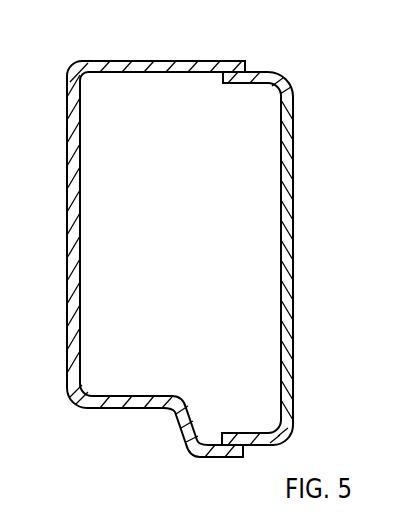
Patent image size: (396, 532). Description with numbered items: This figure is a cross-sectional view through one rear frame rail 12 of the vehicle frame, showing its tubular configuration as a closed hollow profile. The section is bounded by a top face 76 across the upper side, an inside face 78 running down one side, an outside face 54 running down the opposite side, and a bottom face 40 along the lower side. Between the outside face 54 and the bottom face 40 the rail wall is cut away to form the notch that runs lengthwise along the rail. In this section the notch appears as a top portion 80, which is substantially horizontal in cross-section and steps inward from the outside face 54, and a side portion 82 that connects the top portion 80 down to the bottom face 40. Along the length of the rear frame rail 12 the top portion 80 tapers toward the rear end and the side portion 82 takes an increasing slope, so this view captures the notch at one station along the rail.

The rear frame rail 12 is at (285, 63).
The bottom face 40 is at (222, 458).
The outside face 54 is at (68, 368).
The top face 76 is at (218, 61).
The inside face 78 is at (293, 260).
The top portion 80 is at (117, 408).
The side portion 82 is at (182, 430).